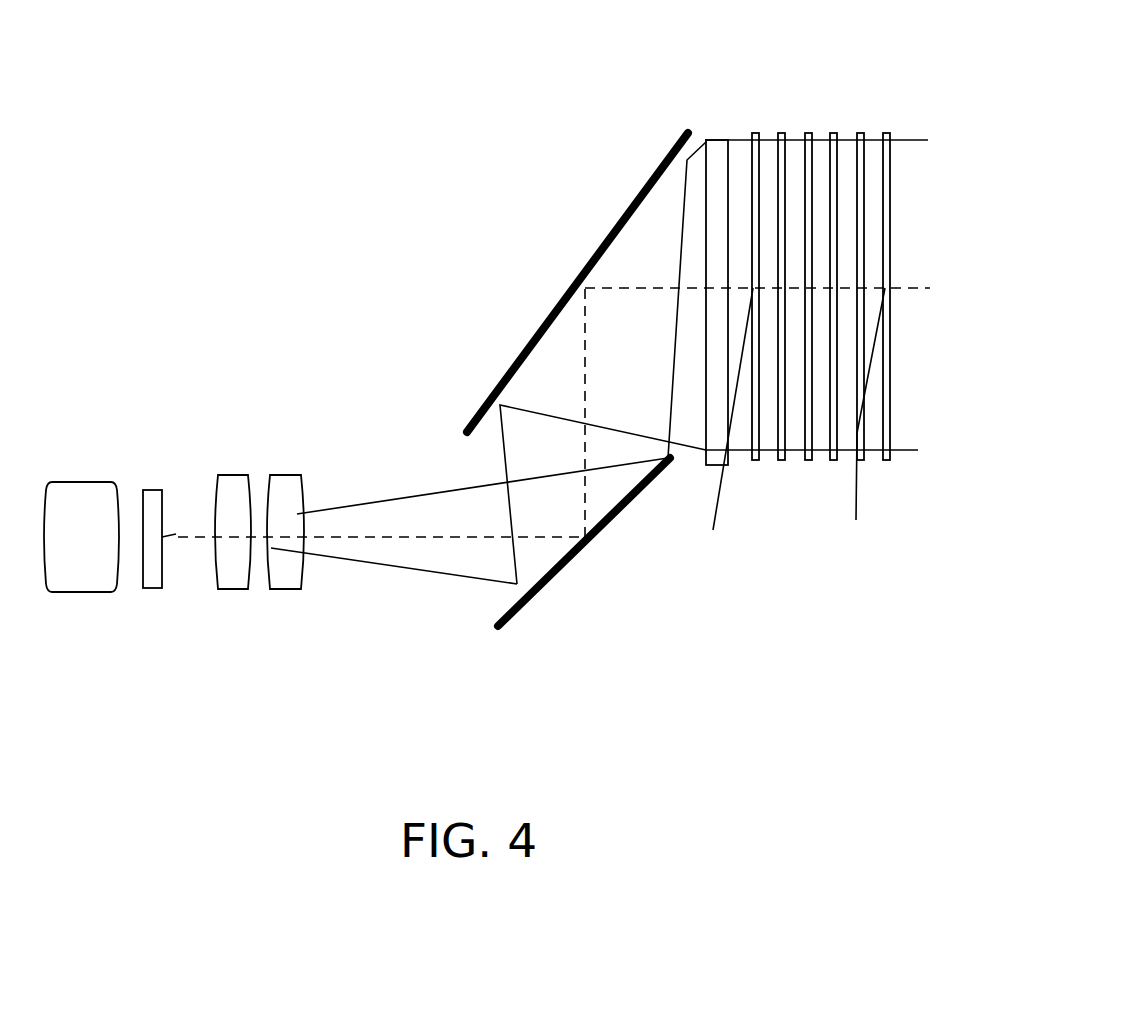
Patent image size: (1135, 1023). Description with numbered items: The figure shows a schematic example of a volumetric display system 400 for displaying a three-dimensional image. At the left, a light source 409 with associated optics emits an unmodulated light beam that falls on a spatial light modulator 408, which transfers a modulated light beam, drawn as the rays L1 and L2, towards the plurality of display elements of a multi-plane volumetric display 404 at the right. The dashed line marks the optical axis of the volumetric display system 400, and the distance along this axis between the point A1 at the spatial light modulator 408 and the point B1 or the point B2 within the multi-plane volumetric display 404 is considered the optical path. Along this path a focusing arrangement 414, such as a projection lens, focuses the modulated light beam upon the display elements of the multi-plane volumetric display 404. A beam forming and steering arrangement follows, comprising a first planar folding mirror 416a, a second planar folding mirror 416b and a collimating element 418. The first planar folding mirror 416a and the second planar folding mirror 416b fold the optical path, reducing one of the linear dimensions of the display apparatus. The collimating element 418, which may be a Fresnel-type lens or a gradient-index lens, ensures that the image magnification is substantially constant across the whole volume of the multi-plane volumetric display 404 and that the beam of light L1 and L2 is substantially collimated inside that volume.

The volumetric display system 400 is at (138, 102).
The multi-plane volumetric display 404 is at (902, 114).
The spatial light modulator 408 is at (148, 502).
The light source 409 is at (70, 497).
The focusing arrangement 414 is at (223, 477).
The first planar folding mirror 416a is at (603, 530).
The second planar folding mirror 416b is at (530, 306).
The collimating element 418 is at (713, 160).
The point A1 is at (176, 534).
The point B1 is at (713, 530).
The point B2 is at (856, 520).
The modulated light beam L1 is at (408, 495).
The modulated light beam L2 is at (380, 568).